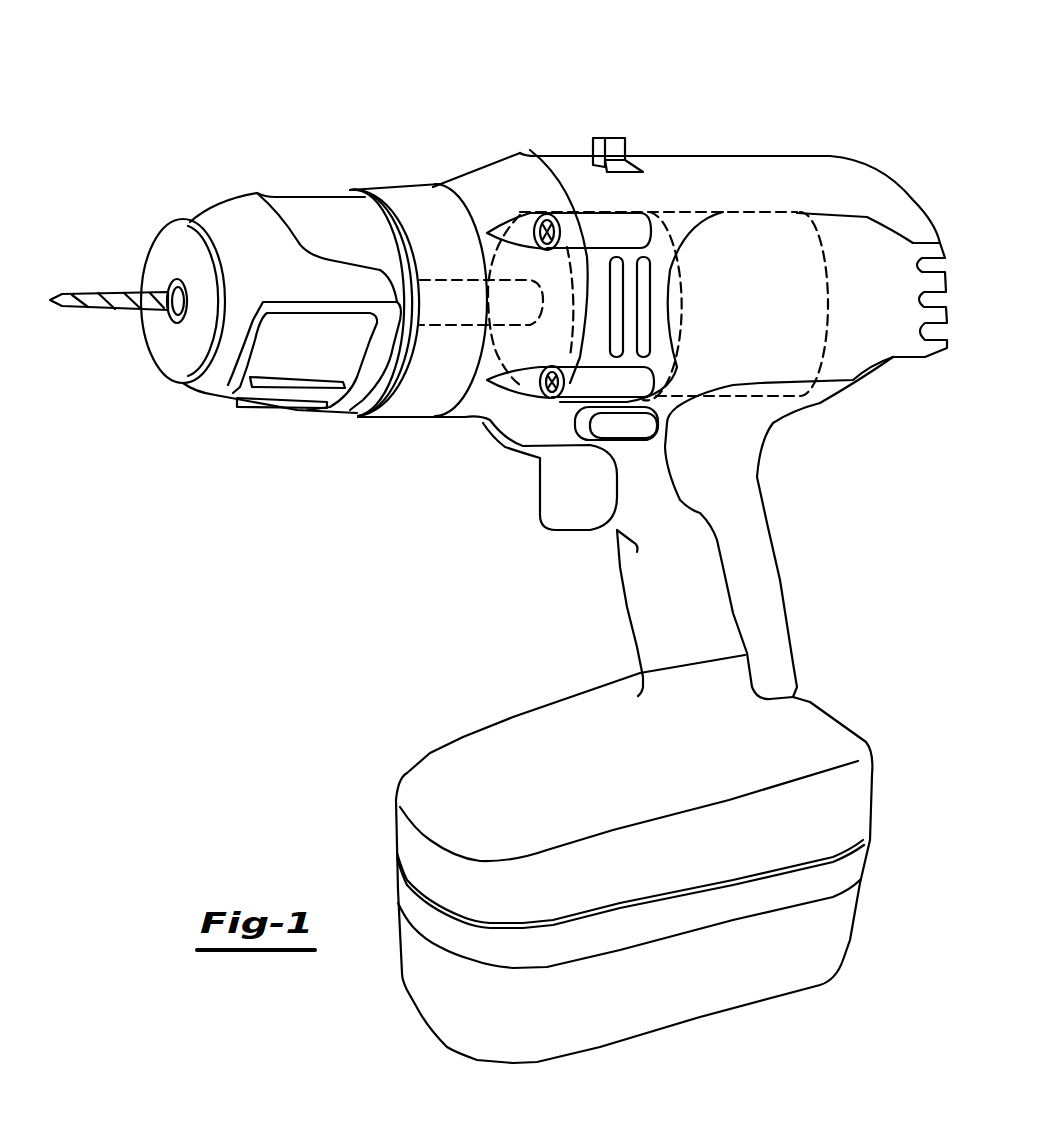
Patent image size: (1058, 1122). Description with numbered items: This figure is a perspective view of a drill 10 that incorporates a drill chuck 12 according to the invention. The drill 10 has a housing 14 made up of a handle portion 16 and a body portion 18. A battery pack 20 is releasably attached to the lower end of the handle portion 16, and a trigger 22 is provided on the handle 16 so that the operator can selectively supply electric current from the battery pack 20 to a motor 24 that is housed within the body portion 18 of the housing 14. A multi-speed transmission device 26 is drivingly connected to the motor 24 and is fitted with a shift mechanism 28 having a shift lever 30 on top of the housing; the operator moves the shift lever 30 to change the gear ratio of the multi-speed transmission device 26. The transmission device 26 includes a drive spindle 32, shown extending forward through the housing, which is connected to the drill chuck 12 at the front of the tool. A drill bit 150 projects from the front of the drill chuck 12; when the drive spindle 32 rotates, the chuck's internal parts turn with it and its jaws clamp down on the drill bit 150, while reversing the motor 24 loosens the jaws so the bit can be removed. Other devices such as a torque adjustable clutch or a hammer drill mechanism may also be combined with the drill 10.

The drill 10 is at (752, 125).
The drill chuck 12 is at (258, 182).
The housing 14 is at (782, 499).
The handle portion 16 is at (763, 607).
The body portion 18 is at (580, 170).
The battery pack 20 is at (830, 947).
The trigger 22 is at (567, 488).
The motor 24 is at (740, 235).
The multi-speed transmission device 26 is at (530, 350).
The shift mechanism 28 is at (608, 123).
The shift lever 30 is at (627, 155).
The drive spindle 32 is at (453, 278).
The drill bit 150 is at (108, 288).